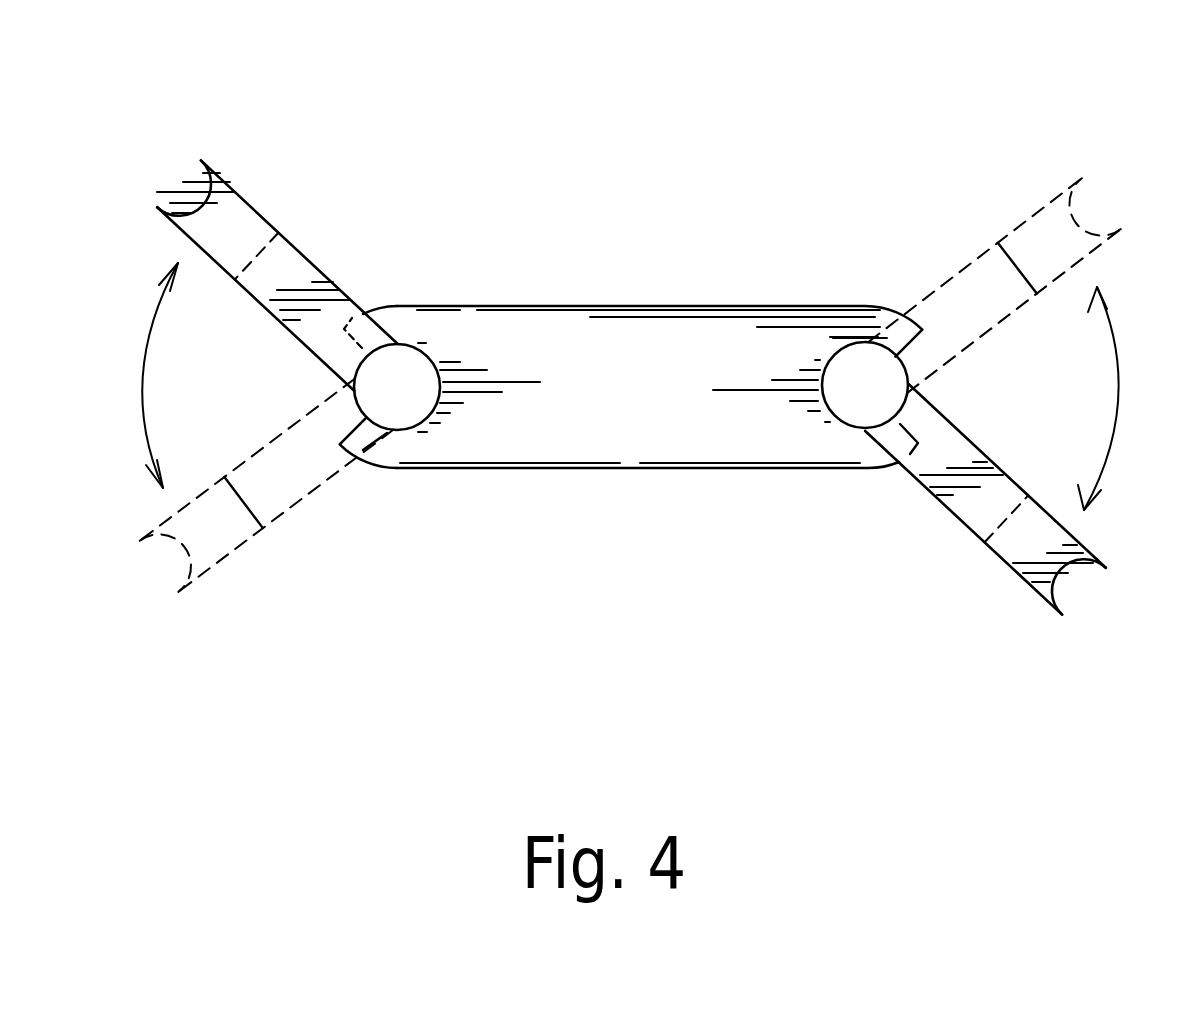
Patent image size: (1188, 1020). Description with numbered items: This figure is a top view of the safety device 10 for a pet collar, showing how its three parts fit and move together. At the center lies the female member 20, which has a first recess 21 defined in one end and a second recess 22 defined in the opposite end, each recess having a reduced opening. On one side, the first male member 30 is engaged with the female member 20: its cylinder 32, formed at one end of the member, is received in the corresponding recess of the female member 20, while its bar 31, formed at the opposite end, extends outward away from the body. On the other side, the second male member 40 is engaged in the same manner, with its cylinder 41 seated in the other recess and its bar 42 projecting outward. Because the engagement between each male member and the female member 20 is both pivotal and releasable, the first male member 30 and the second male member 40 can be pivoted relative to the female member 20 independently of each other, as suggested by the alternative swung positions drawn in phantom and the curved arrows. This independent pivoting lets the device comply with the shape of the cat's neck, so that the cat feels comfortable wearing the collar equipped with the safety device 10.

The safety device 10 is at (585, 200).
The female member 20 is at (666, 323).
The first recess 21 is at (836, 362).
The second recess 22 is at (438, 383).
The first male member 30 is at (982, 490).
The bar 31 is at (1052, 608).
The cylinder 32 is at (882, 450).
The second male member 40 is at (290, 273).
The cylinder 41 is at (364, 318).
The bar 42 is at (225, 177).